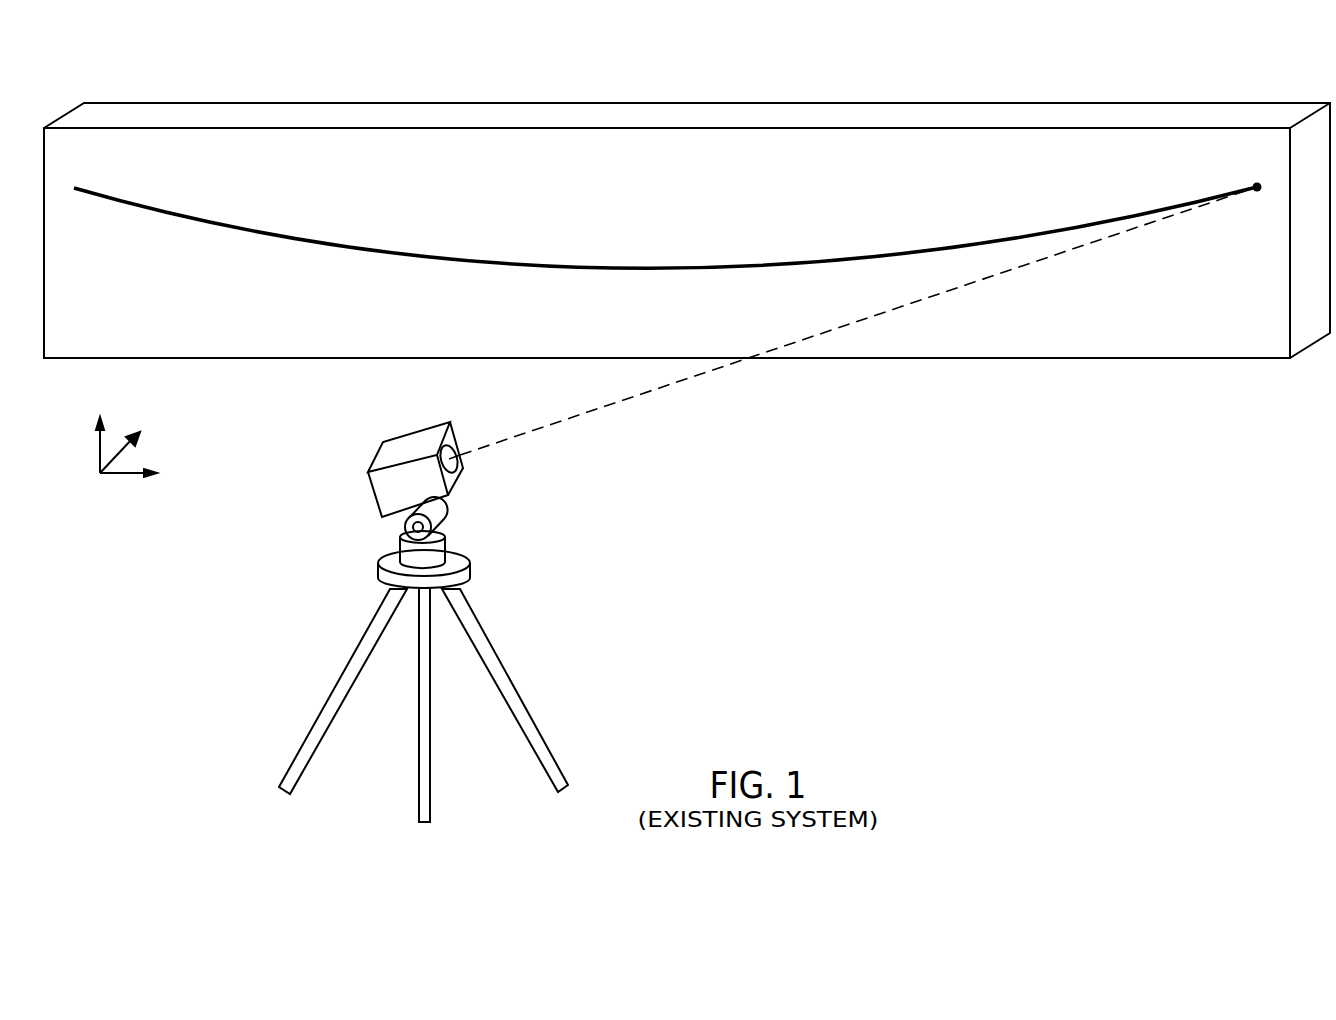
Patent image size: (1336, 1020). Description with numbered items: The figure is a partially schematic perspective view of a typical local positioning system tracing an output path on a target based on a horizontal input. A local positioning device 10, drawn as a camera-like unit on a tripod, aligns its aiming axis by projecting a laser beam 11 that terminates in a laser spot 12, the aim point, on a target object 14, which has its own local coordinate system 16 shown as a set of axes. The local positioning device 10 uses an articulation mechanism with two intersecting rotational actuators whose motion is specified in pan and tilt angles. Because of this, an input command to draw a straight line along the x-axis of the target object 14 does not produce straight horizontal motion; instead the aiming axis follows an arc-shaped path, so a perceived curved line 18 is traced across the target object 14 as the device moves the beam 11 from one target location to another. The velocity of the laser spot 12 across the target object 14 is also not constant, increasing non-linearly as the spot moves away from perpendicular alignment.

The local positioning device 10 is at (371, 464).
The laser beam 11 is at (655, 390).
The laser spot 12 is at (1254, 186).
The target object 14 is at (1163, 358).
The local coordinate system 16 is at (122, 475).
The curved line 18 is at (644, 267).